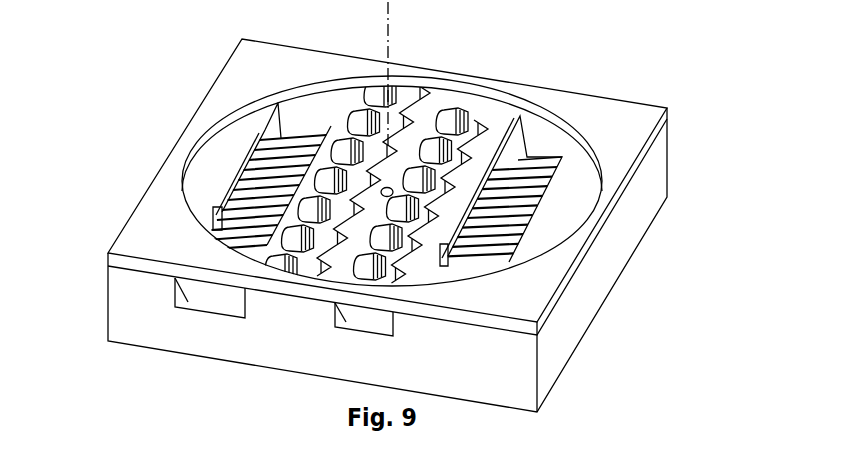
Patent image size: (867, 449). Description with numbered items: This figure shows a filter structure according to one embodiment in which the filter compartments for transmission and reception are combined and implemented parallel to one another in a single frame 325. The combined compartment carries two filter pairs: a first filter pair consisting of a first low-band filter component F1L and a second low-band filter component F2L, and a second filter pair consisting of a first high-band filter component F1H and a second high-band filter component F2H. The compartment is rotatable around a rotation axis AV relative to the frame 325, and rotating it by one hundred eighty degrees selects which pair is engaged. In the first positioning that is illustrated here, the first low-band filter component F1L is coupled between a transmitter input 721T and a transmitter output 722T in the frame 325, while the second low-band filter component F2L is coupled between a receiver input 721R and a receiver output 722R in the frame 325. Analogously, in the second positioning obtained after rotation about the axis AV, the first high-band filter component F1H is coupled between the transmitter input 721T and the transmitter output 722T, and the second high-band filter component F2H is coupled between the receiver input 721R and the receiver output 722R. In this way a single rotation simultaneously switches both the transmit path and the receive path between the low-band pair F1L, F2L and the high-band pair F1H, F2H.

The frame 325 is at (553, 355).
The receiver input 721R is at (270, 156).
The transmitter input 721T is at (363, 319).
The receiver output 722R is at (207, 297).
The transmitter output 722T is at (465, 143).
The first low-band filter component F1L is at (340, 138).
The first high-band filter component F1H is at (462, 147).
The second high-band filter component F2H is at (243, 185).
The second low-band filter component F2L is at (527, 185).
The rotation axis AV is at (363, 74).